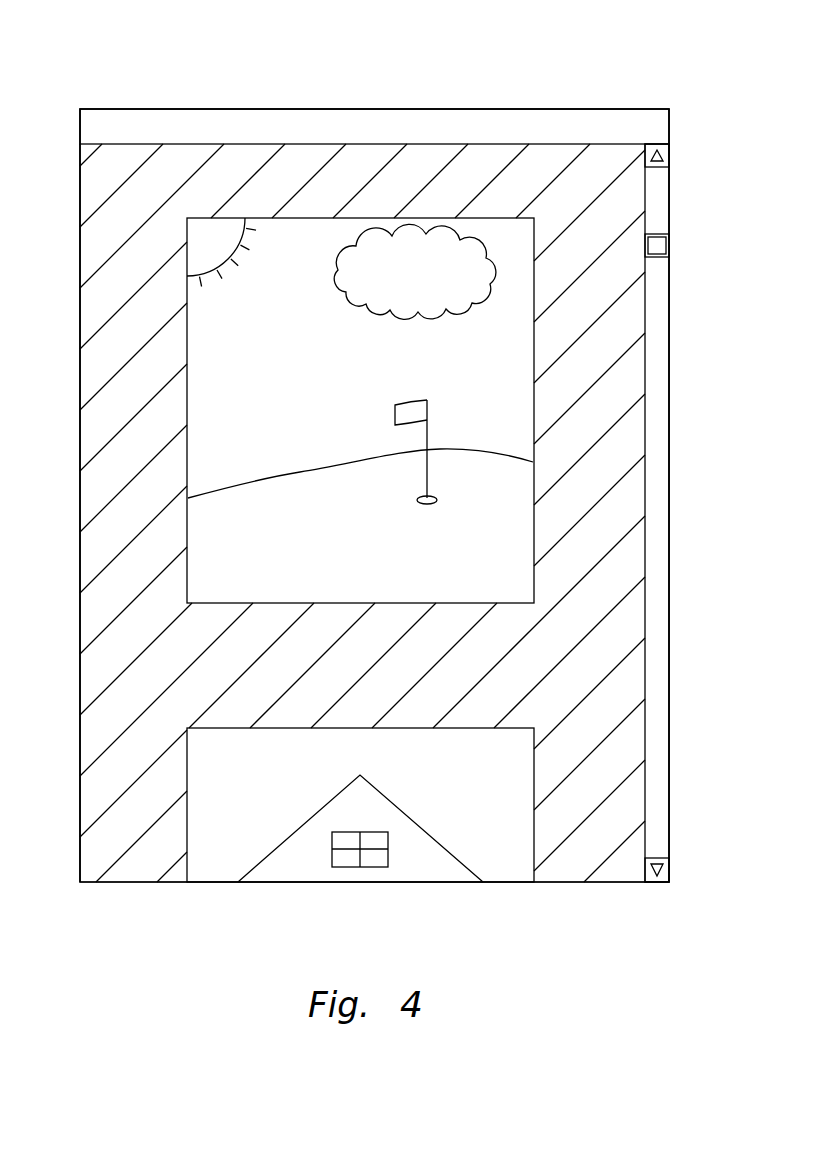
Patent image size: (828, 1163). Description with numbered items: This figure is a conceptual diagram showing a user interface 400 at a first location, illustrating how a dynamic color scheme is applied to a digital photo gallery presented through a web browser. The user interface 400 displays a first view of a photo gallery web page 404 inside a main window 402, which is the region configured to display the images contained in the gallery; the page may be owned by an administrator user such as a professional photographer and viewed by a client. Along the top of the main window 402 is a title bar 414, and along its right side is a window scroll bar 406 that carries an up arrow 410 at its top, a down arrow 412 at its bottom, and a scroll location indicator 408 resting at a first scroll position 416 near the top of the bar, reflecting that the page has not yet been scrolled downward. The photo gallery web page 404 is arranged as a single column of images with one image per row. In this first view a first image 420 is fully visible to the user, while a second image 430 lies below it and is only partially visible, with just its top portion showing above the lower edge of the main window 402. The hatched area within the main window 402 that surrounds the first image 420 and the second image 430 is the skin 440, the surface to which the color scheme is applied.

The user interface 400 is at (106, 38).
The main window 402 is at (78, 482).
The photo gallery web page 404 is at (80, 320).
The window scroll bar 406 is at (655, 192).
The scroll location indicator 408 is at (656, 245).
The up arrow 410 is at (665, 156).
The down arrow 412 is at (665, 870).
The title bar 414 is at (626, 120).
The first scroll position 416 is at (655, 262).
The first image 420 is at (257, 367).
The second image 430 is at (257, 777).
The skin 440 is at (108, 662).